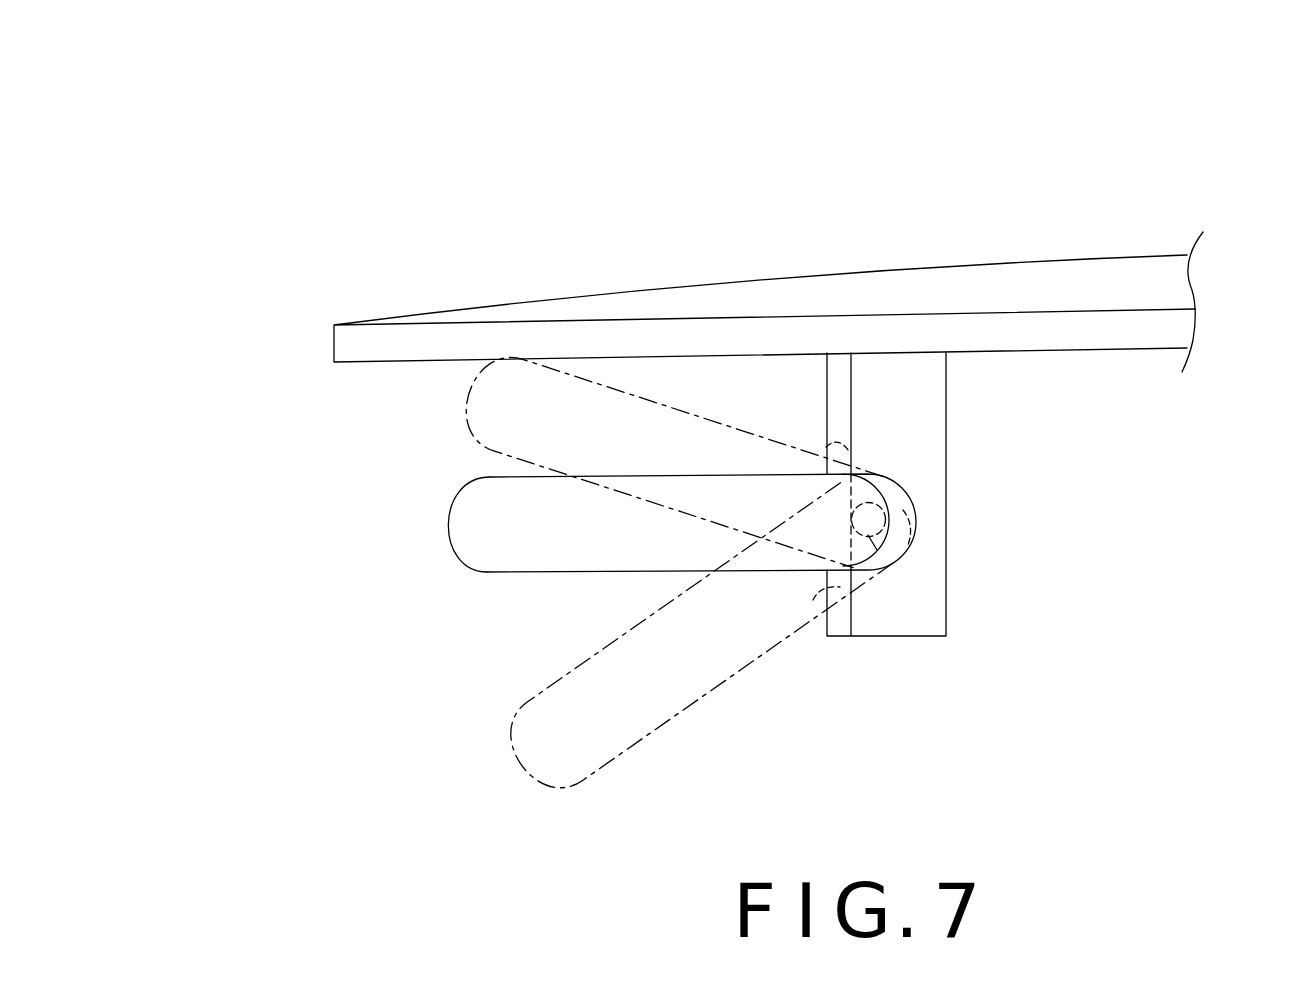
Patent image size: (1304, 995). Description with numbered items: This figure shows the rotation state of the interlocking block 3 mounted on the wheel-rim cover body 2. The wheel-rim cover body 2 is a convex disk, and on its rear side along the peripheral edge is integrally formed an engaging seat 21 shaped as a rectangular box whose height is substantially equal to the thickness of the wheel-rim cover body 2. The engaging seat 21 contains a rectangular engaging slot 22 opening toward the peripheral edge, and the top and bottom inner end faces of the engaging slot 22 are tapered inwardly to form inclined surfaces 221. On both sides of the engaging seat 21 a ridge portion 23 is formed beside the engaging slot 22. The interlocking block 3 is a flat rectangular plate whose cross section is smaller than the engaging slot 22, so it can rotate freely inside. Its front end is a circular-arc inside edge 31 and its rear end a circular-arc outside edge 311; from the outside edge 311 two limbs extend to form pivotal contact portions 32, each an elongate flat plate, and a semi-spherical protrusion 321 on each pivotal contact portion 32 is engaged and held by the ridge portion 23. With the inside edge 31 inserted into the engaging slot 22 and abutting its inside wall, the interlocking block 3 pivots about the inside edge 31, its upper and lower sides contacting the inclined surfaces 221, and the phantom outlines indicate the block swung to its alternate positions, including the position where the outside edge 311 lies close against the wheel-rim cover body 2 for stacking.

The wheel-rim cover body 2 is at (1125, 258).
The engaging seat 21 is at (919, 462).
The engaging slot 22 is at (915, 535).
The inclined surface 221 is at (828, 447).
The ridge portion 23 is at (840, 360).
The interlocking block 3 is at (724, 565).
The inside edge 31 is at (1055, 652).
The outside edge 311 is at (450, 525).
The pivotal contact portion 32 is at (553, 606).
The semi-spherical protrusion 321 is at (877, 552).